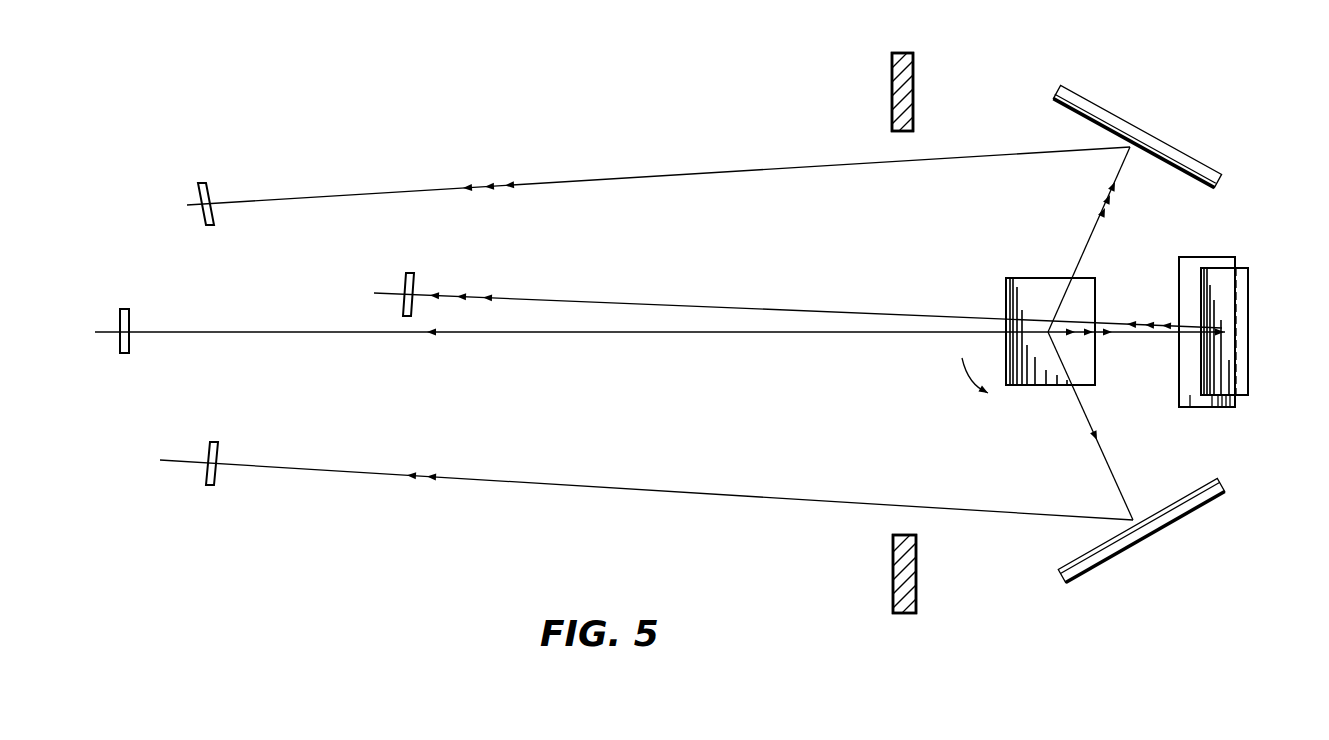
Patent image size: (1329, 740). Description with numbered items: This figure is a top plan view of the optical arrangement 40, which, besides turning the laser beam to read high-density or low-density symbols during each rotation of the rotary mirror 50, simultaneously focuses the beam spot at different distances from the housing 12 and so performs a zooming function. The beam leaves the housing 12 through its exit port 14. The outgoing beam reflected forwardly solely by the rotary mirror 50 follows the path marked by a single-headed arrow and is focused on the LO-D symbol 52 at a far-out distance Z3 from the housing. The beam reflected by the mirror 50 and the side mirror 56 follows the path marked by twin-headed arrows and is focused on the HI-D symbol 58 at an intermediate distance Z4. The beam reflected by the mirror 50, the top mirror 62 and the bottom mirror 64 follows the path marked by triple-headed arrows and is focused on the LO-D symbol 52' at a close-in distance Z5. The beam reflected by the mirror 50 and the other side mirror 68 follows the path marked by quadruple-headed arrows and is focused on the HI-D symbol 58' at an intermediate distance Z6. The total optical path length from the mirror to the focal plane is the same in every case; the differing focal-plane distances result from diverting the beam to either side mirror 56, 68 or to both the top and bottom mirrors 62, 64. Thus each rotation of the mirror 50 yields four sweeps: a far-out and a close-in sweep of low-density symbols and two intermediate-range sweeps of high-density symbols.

The housing 12 is at (912, 100).
The exit port 14 is at (908, 131).
The optical arrangement 40 is at (1250, 192).
The rotary mirror 50 is at (1045, 381).
The LO-D symbol 52 is at (146, 327).
The LO-D symbol 52' is at (437, 286).
The side mirror 56 is at (1188, 506).
The HI-D symbol 58 is at (231, 456).
The HI-D symbol 58' is at (229, 198).
The top mirror 62 is at (1240, 338).
The bottom mirror 64 is at (1188, 285).
The side mirror 68 is at (1198, 136).
The far-out distance Z3 is at (357, 333).
The intermediate distance Z4 is at (646, 490).
The close-in distance Z5 is at (798, 304).
The intermediate distance Z6 is at (548, 178).